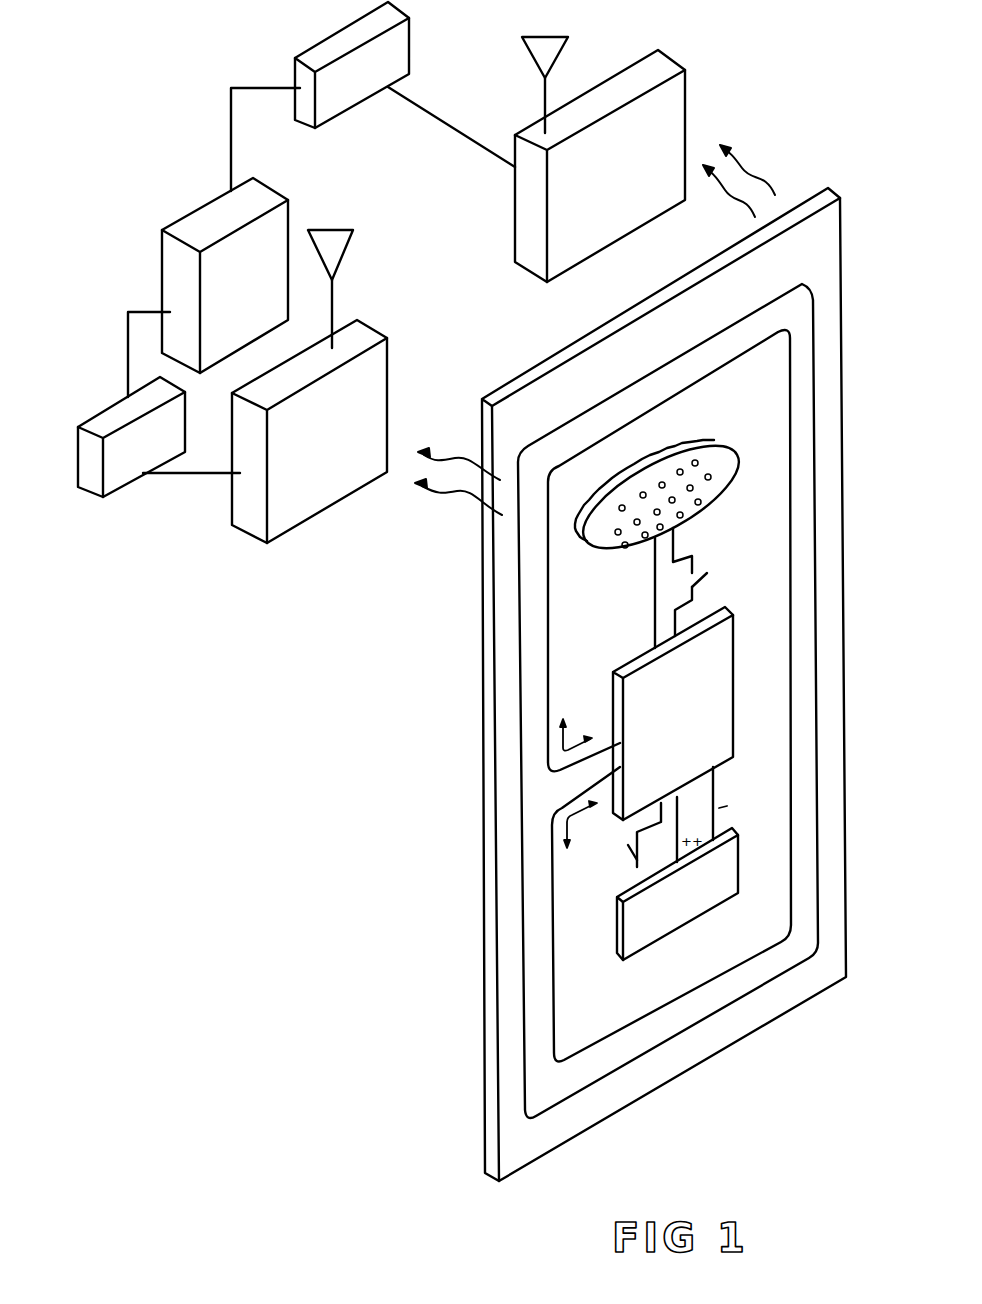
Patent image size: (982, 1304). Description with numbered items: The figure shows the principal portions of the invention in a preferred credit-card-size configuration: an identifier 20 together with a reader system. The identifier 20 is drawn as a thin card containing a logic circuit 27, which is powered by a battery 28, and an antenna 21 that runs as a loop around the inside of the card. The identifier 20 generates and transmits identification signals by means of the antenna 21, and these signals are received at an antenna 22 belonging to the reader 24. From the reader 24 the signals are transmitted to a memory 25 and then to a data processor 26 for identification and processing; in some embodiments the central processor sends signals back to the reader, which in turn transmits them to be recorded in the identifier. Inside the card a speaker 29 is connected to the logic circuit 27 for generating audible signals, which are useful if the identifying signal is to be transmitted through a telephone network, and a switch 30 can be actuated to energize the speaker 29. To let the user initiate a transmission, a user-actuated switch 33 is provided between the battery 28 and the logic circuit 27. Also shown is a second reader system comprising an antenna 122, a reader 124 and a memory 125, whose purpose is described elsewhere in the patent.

The identifier 20 is at (838, 245).
The antenna 21 is at (820, 522).
The antenna 22 is at (337, 248).
The reader 24 is at (355, 478).
The memory 25 is at (115, 482).
The data processor 26 is at (267, 197).
The logic circuit 27 is at (735, 700).
The battery 28 is at (735, 896).
The speaker 29 is at (693, 452).
The switch 30 is at (708, 583).
The switch 33 is at (628, 858).
The antenna 122 is at (563, 55).
The reader 124 is at (677, 130).
The memory 125 is at (327, 43).